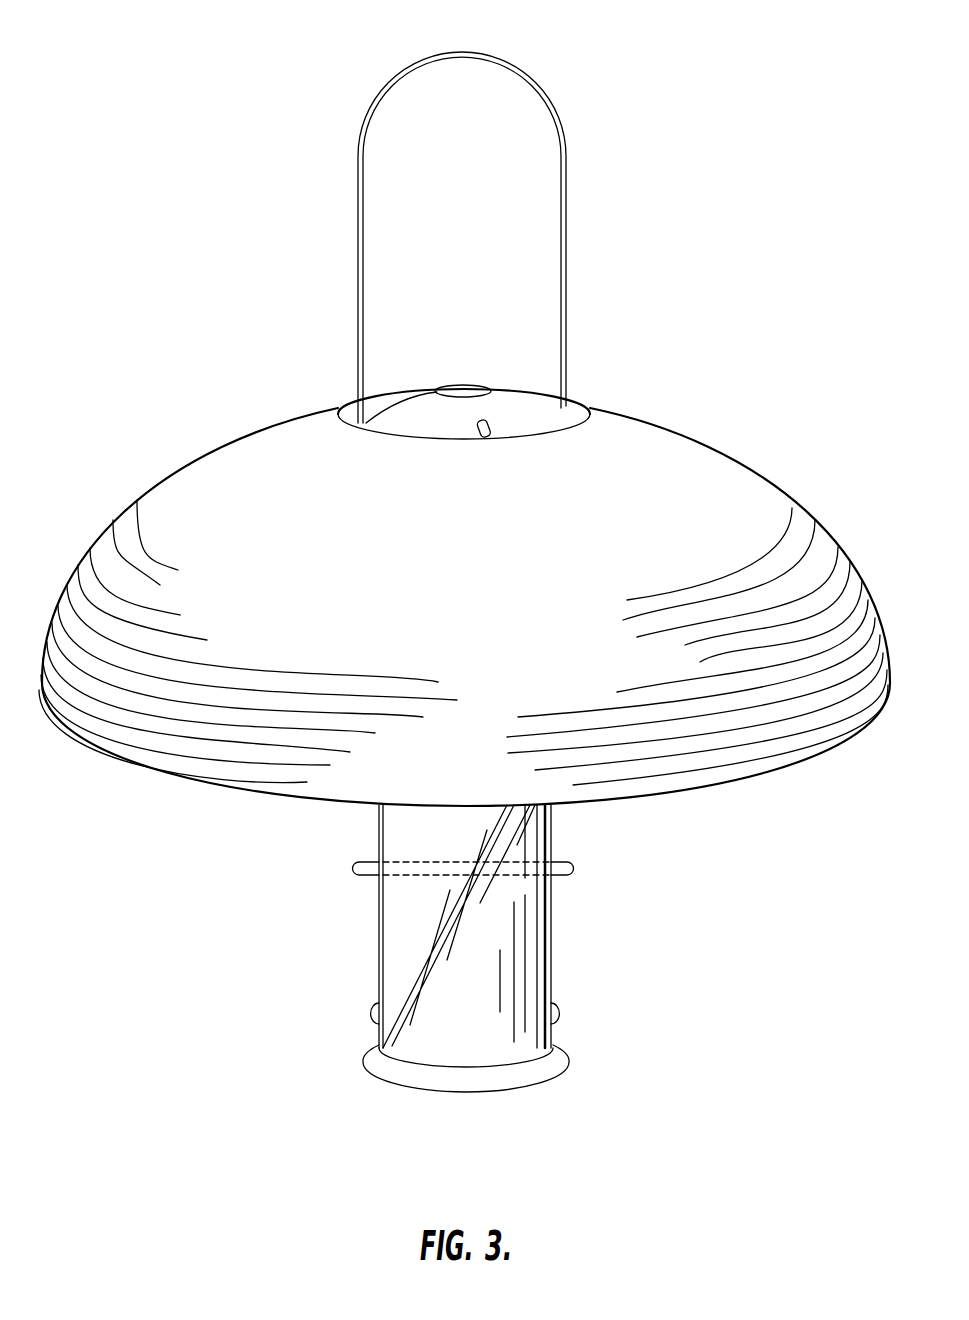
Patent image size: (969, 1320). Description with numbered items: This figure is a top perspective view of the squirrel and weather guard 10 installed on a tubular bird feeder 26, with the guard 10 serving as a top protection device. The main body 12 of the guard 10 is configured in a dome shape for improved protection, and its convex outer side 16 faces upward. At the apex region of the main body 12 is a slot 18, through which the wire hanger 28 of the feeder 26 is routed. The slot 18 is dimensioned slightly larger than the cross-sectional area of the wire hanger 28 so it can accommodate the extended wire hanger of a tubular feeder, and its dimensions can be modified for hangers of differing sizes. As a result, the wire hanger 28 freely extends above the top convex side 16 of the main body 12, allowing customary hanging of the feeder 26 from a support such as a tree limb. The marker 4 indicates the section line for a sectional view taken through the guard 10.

The guard 10 is at (464, 572).
The main body 12 is at (464, 583).
The convex outer side 16 is at (237, 472).
The slot 18 is at (411, 393).
The bird feeder 26 is at (563, 965).
The wire hanger 28 is at (566, 258).
The section line 4- 4 is at (430, 0).